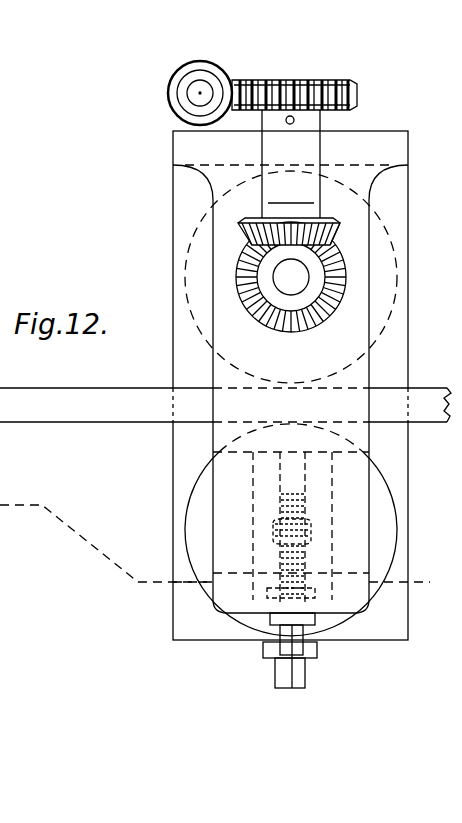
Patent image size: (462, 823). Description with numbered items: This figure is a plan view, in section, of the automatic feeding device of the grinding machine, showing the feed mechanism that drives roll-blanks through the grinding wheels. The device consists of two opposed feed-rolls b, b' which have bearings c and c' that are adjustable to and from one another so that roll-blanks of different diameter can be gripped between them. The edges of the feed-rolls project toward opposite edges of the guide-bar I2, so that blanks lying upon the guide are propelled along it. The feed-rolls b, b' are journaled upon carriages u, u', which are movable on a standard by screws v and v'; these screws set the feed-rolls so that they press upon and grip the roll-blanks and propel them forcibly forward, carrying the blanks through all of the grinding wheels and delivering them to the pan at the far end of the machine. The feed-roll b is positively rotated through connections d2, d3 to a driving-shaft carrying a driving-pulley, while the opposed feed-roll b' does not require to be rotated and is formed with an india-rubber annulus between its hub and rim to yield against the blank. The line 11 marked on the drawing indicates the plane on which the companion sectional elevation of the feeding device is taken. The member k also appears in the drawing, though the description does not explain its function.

The carriage u is at (284, 385).
The carriage u' is at (326, 526).
The feed-roll b is at (260, 277).
The feed-roll b' is at (268, 530).
The bearing c is at (291, 292).
The bearing c' is at (271, 528).
The connection d2 is at (275, 80).
The connection d3 is at (197, 88).
The guide-bar I2 is at (111, 420).
The dashed member k is at (0, 447).
The section line 11 is at (315, 584).
The screw v is at (310, 658).
The screw v' is at (315, 642).